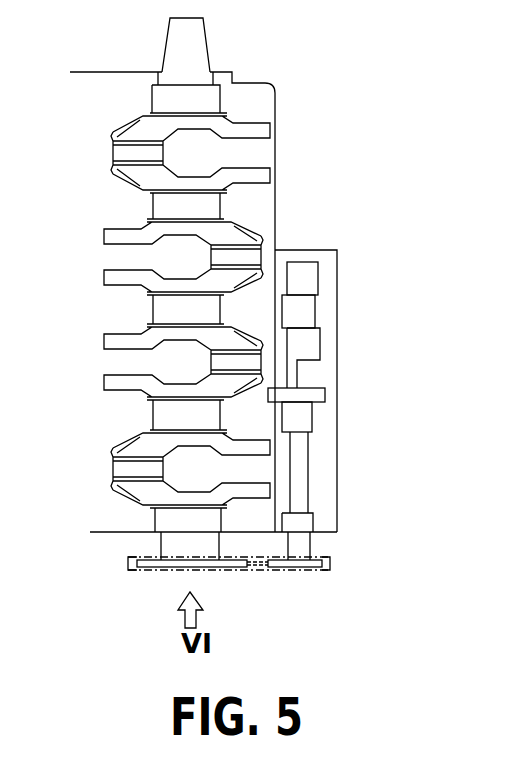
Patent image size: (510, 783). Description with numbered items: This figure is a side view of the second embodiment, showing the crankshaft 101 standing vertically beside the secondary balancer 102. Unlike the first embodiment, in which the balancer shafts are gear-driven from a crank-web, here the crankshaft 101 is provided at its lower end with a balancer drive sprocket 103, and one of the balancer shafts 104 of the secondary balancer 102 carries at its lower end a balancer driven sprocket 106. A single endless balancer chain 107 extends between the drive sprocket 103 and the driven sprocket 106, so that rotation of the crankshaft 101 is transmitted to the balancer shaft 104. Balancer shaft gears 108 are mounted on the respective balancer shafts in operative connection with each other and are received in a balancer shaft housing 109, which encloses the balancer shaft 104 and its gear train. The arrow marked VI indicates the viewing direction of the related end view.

The crankshaft 101 is at (173, 38).
The secondary balancer 102 is at (347, 283).
The balancer drive sprocket 103 is at (147, 569).
The balancer shaft 104 is at (305, 415).
The balancer driven sprocket 106 is at (310, 569).
The balancer chain 107 is at (260, 572).
The balancer shaft gears 108 is at (318, 393).
The balancer shaft housing 109 is at (338, 497).